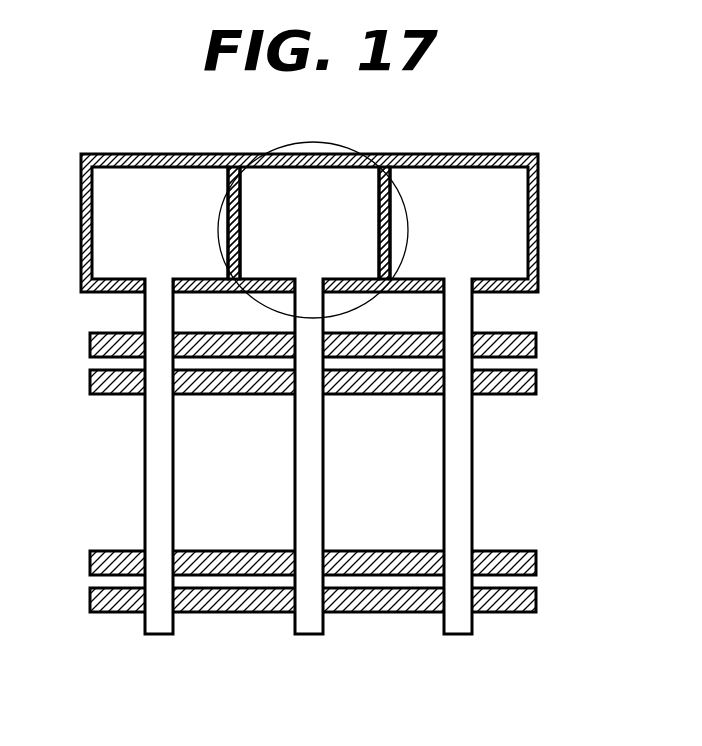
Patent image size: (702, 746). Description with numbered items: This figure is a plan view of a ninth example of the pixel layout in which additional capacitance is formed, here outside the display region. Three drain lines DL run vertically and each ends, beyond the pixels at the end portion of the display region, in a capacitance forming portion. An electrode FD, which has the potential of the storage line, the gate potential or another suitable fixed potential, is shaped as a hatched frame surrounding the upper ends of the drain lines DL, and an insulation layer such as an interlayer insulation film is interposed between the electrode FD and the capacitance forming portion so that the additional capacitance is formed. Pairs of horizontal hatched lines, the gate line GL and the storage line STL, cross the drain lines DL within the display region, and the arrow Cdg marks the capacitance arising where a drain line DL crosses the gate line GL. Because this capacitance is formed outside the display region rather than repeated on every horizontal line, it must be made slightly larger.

The electrode FD is at (538, 289).
The gate line GL is at (107, 551).
The storage line STL is at (112, 612).
The drain line DL is at (158, 634).
The drain line to gate line capacitance Cdg is at (497, 543).